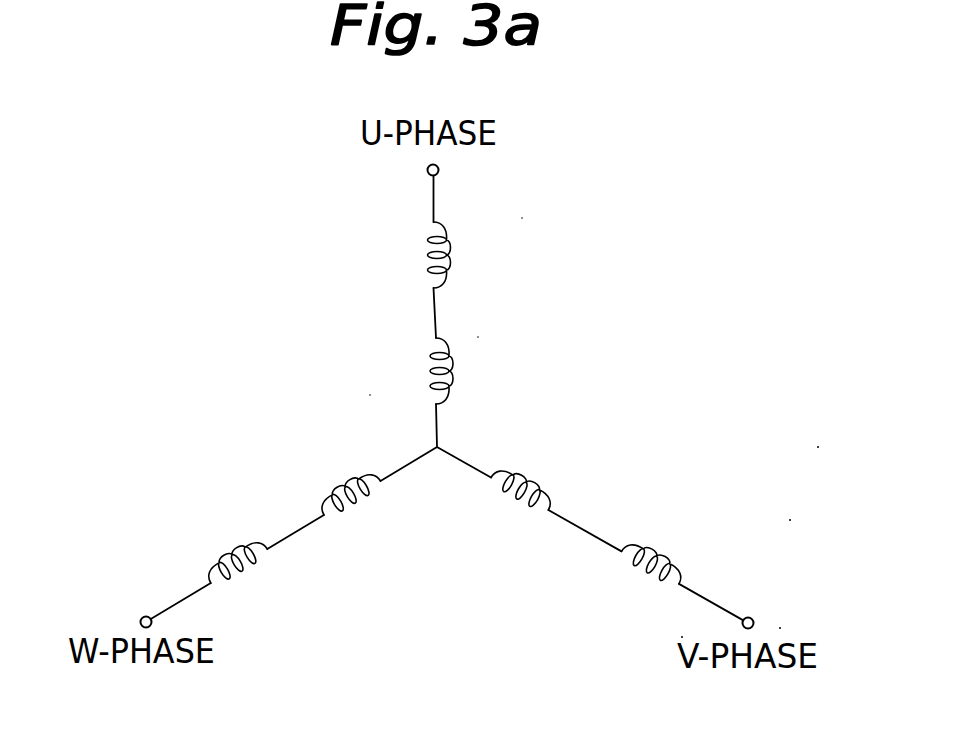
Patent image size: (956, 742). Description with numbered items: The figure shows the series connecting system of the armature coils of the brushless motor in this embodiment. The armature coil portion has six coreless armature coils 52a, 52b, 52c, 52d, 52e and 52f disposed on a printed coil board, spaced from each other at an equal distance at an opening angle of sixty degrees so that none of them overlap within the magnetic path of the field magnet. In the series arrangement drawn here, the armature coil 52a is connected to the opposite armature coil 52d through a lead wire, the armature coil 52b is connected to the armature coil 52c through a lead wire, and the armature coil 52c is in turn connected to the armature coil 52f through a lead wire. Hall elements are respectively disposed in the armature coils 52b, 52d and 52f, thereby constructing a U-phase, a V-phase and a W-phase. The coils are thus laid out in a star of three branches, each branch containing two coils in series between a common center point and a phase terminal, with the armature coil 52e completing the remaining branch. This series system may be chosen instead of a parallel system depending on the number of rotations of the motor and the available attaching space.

The armature coil 52a is at (446, 259).
The armature coil 52b is at (346, 492).
The armature coil 52c is at (522, 480).
The armature coil 52d is at (447, 378).
The armature coil 52e is at (229, 560).
The armature coil 52f is at (648, 554).